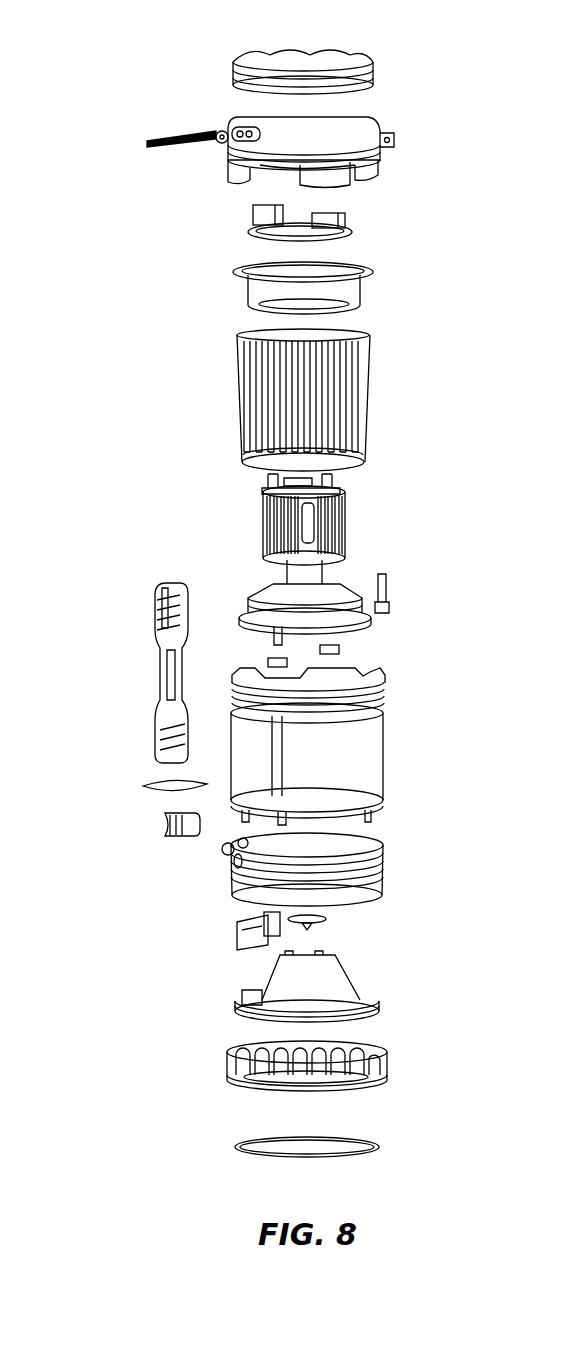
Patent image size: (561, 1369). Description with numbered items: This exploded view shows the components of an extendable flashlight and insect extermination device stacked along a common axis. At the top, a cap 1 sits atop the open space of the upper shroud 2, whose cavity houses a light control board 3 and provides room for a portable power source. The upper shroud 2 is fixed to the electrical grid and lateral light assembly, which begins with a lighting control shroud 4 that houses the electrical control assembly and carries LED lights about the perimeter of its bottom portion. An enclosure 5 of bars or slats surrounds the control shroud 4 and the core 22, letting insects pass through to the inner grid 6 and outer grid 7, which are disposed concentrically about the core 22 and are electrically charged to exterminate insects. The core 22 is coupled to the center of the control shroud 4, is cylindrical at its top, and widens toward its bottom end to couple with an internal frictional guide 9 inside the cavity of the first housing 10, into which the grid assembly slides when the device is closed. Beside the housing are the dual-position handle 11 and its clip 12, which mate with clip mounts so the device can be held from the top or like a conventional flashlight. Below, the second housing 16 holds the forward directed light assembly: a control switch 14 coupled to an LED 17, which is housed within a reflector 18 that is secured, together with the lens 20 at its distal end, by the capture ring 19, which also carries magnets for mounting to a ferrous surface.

The cap 1 is at (360, 56).
The upper shroud 2 is at (358, 137).
The light control board 3 is at (345, 223).
The lighting control shroud 4 is at (345, 290).
The enclosure 5 is at (363, 400).
The inner grid 6 is at (340, 488).
The outer grid 7 is at (346, 522).
The core 22 is at (282, 572).
The internal frictional guide 9 is at (340, 650).
The first housing 10 is at (360, 752).
The dual-position handle 11 is at (152, 612).
The clip 12 is at (142, 786).
The second housing 16 is at (383, 848).
The control switch 14 is at (238, 938).
The LED 17 is at (320, 925).
The reflector 18 is at (340, 973).
The capture ring 19 is at (387, 1060).
The lens 20 is at (380, 1147).